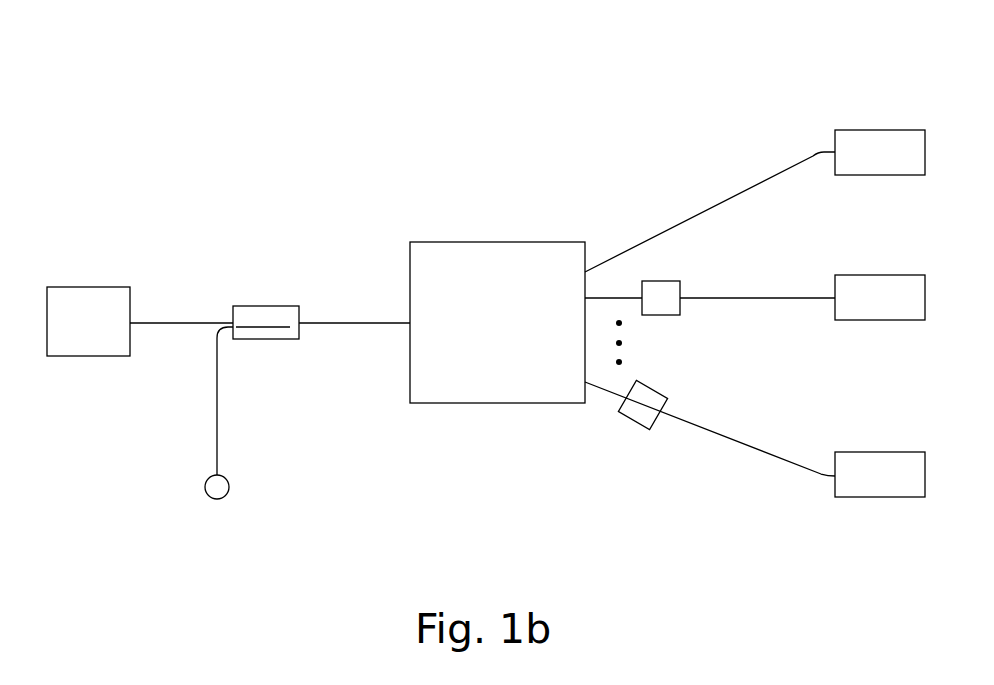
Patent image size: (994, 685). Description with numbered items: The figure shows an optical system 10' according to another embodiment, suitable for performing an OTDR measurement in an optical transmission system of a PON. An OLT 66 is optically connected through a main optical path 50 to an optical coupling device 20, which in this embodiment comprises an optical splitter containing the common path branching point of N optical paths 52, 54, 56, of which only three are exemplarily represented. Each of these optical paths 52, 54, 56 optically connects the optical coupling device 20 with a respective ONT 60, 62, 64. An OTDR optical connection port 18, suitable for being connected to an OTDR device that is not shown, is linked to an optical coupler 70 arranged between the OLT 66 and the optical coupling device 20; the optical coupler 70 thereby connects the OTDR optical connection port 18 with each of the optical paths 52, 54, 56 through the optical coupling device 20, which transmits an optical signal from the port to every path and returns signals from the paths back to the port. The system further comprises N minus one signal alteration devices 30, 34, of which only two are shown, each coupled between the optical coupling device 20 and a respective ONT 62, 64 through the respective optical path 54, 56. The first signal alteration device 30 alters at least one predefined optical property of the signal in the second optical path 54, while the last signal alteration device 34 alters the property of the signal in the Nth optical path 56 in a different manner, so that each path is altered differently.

The optical system 10' is at (219, 96).
The OLT 66 is at (87, 287).
The main optical path 50 is at (173, 322).
The optical coupler 70 is at (262, 306).
The OTDR optical connection port 18 is at (204, 485).
The optical coupling device 20 is at (498, 403).
The first optical path 52 is at (797, 165).
The second optical path 54 is at (805, 298).
The Nth optical path 56 is at (777, 458).
The first signal alteration device 30 is at (680, 308).
The (N−1)th signal alteration device 34 is at (632, 423).
The ONT 60 is at (880, 130).
The ONT 62 is at (880, 275).
The ONT 64 is at (878, 452).